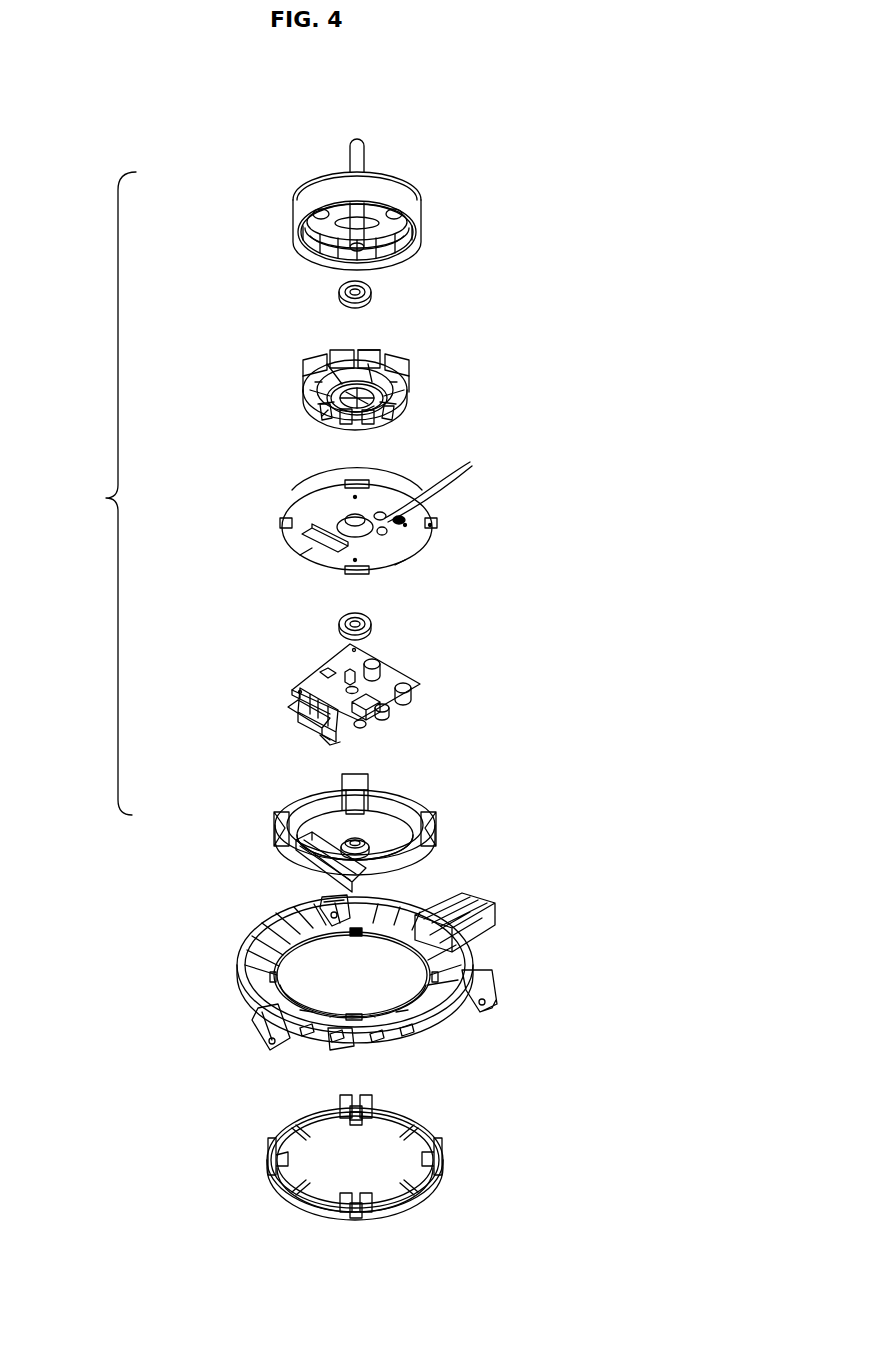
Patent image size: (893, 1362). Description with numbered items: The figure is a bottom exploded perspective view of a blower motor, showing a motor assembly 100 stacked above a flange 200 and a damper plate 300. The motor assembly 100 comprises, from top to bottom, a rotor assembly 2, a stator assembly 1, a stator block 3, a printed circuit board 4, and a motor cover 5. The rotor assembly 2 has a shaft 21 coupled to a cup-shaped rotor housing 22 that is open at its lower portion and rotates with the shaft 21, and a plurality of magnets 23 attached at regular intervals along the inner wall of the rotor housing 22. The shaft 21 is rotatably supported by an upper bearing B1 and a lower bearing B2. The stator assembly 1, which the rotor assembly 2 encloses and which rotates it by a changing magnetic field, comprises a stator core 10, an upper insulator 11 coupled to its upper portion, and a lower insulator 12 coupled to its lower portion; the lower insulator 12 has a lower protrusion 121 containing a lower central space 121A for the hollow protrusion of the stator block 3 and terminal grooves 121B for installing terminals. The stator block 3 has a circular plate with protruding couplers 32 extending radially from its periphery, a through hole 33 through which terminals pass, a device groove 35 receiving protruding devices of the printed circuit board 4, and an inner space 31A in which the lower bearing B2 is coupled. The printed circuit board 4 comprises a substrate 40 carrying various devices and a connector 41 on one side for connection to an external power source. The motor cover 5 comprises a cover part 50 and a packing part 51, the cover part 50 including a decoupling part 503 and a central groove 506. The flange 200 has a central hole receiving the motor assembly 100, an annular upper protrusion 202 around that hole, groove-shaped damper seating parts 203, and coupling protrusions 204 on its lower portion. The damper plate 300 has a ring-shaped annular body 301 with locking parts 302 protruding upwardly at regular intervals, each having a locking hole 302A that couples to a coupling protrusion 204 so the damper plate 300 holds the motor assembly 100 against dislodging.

The motor assembly 100 is at (98, 493).
The stator assembly 1 is at (326, 386).
The stator core 10 is at (405, 380).
The upper insulator 11 is at (366, 349).
The lower insulator 12 is at (400, 414).
The lower protrusion 121 is at (406, 398).
The lower central space 121A is at (376, 412).
The terminal grooves 121B is at (323, 418).
The rotor assembly 2 is at (316, 194).
The shaft 21 is at (362, 156).
The rotor housing 22 is at (398, 203).
The magnets 23 is at (400, 262).
The upper bearing B1 is at (340, 290).
The lower bearing B2 is at (340, 628).
The stator block 3 is at (327, 522).
The inner space 31A is at (385, 537).
The protruding coupler 32 is at (370, 483).
The through hole 33 is at (434, 486).
The device groove 35 is at (318, 542).
The printed circuit board 4 is at (302, 687).
The substrate 40 is at (385, 653).
The connector 41 is at (290, 730).
The motor cover 5 is at (328, 811).
The cover part 50 is at (385, 806).
The packing part 51 is at (290, 802).
The decoupling part 503 is at (355, 779).
The central groove 506 is at (372, 852).
The flange 200 is at (347, 955).
The upper protrusion 202 is at (460, 902).
The damper seating part 203 is at (256, 975).
The coupling protrusion 204 is at (362, 930).
The damper plate 300 is at (331, 1135).
The annular body 301 is at (410, 1120).
The locking parts 302 is at (397, 1134).
The locking hole 302A is at (352, 1100).